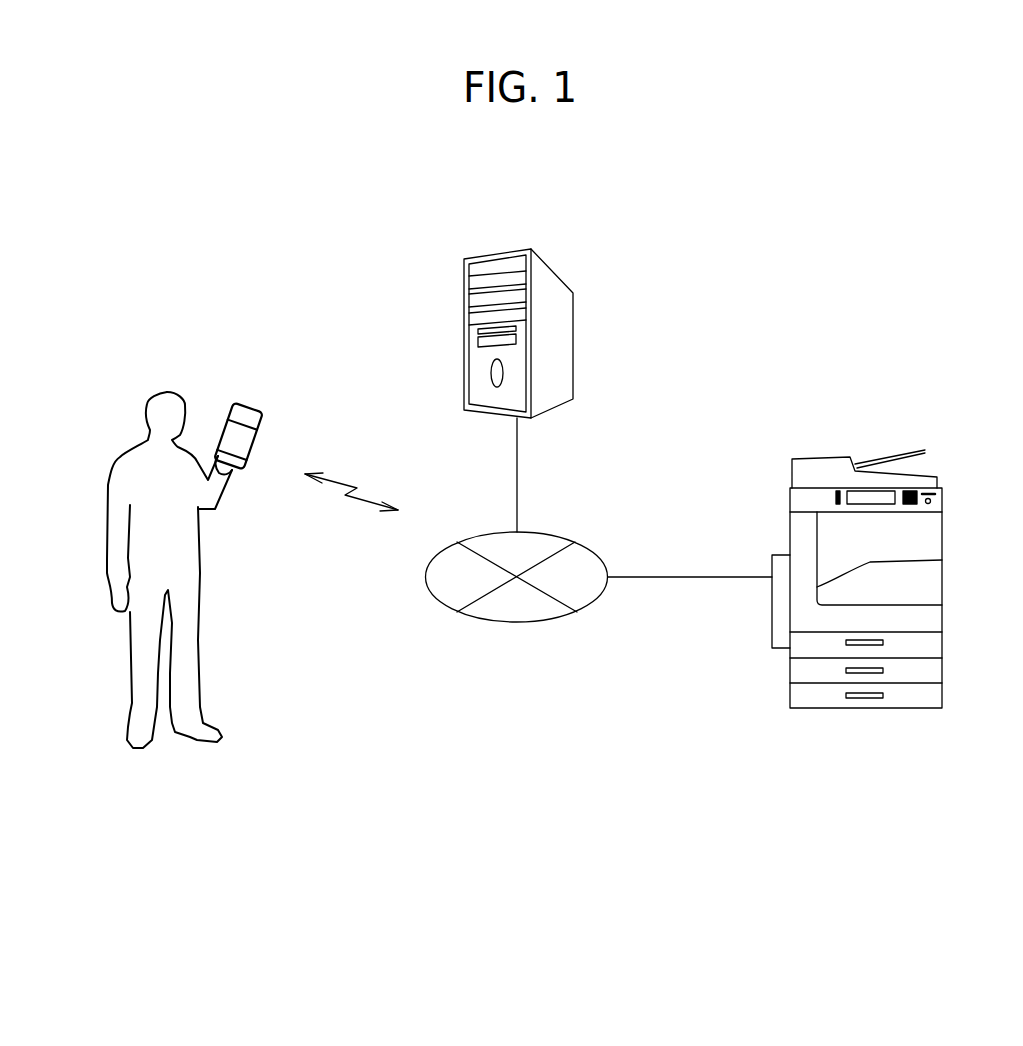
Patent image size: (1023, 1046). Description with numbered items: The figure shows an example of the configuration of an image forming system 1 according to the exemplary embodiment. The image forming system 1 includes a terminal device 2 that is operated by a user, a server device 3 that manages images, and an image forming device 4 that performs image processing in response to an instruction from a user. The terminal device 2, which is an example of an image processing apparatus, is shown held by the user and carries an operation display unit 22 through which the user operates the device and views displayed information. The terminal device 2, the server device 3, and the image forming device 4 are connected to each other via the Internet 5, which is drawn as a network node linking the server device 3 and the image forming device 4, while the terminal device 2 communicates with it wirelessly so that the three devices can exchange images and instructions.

The image forming system 1 is at (818, 259).
The terminal device 2 is at (250, 402).
The operation display unit 22 is at (247, 432).
The server device 3 is at (551, 262).
The image forming device 4 is at (942, 533).
The Internet 5 is at (517, 624).